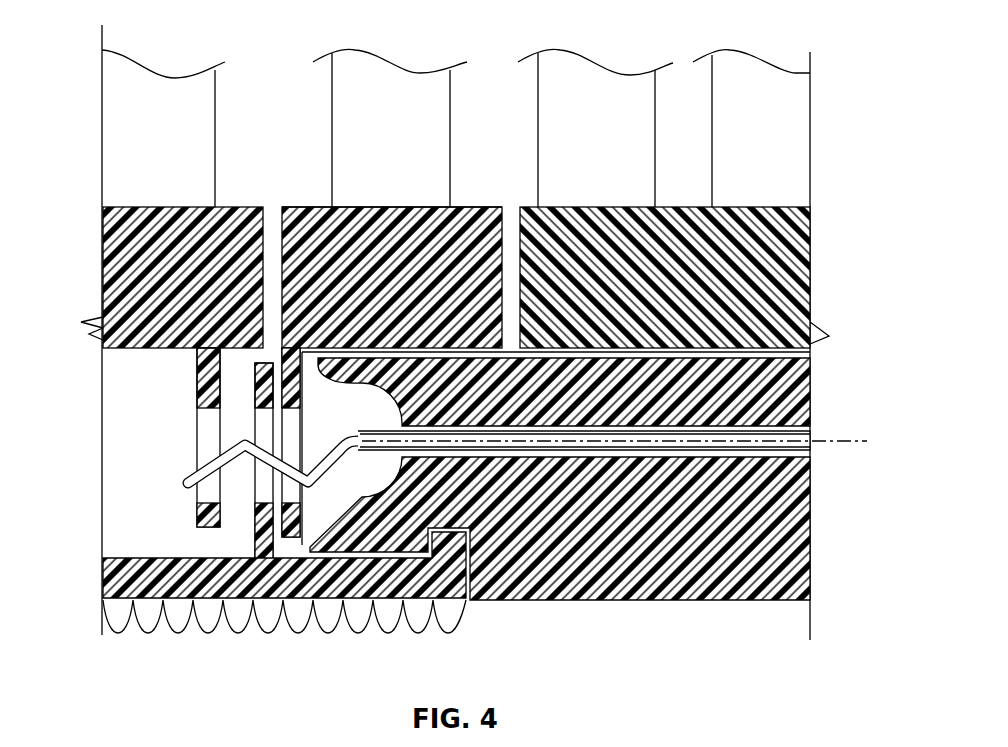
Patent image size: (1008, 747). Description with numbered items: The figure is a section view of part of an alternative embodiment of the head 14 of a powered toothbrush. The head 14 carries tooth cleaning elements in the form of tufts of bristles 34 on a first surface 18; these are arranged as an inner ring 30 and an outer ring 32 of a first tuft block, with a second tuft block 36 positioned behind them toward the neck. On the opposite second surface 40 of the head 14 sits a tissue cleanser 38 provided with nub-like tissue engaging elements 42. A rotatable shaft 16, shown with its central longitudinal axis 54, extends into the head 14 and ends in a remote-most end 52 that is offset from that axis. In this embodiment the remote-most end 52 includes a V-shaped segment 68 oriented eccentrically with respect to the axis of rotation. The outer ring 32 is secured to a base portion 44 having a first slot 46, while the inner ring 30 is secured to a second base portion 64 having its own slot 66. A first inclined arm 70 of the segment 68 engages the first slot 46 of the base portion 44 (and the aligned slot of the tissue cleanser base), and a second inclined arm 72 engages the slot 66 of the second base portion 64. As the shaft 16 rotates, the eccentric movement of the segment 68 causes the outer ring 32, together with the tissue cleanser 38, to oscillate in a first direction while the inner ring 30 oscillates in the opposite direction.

The head 14 is at (792, 503).
The shaft 16 is at (807, 458).
The first surface 18 is at (457, 208).
The inner ring 30 is at (228, 253).
The outer ring 32 is at (400, 230).
The tufts of bristles 34 is at (803, 133).
The second tuft block 36 is at (773, 270).
The tissue cleanser 38 is at (453, 600).
The second surface 40 is at (712, 600).
The tissue engaging elements 42 is at (351, 624).
The base portion 44 is at (303, 383).
The first slot 46 is at (347, 444).
The remote-most end 52 is at (345, 444).
The central longitudinal axis 54 is at (833, 440).
The second base portion 64 is at (197, 353).
The slot 66 is at (213, 437).
The V-shaped segment 68 is at (237, 438).
The first inclined arm 70 is at (270, 457).
The second inclined arm 72 is at (190, 483).